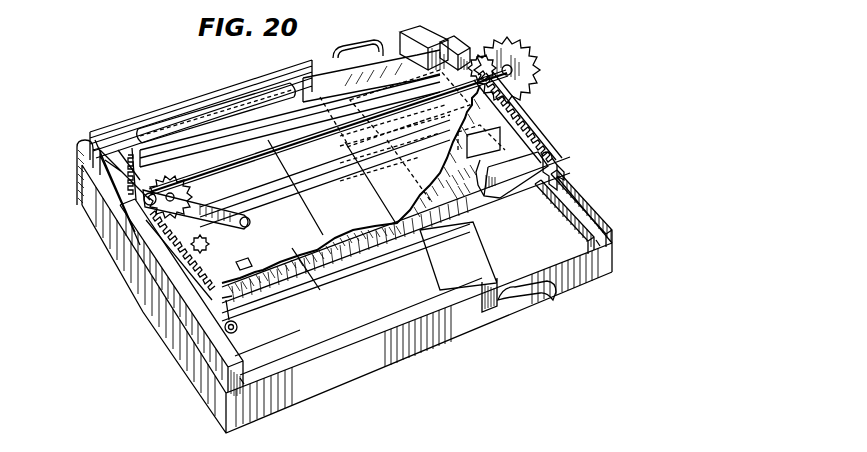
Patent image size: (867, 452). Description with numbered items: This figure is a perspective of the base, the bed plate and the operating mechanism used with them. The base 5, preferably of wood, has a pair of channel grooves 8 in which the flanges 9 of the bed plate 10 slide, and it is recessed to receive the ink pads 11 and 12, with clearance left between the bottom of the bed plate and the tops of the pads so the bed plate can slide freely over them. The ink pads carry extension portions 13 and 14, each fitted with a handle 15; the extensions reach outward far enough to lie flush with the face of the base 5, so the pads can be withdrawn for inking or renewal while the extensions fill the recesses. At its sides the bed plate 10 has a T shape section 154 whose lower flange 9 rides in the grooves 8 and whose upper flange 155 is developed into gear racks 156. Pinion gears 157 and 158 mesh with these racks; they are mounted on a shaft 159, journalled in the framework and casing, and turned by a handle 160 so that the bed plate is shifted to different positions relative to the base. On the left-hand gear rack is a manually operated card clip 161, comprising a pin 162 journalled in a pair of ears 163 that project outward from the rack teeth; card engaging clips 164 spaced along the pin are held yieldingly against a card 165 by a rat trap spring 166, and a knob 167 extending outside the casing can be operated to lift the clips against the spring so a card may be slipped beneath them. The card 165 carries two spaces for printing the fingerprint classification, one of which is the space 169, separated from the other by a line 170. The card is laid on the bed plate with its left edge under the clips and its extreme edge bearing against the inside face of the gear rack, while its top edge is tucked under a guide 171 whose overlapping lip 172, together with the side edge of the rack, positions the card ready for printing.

The base 5 is at (348, 368).
The channel grooves 8 is at (242, 380).
The flanges 9 is at (572, 181).
The bed plate 10 is at (387, 244).
The ink pad 11 is at (487, 187).
The ink pad 12 is at (446, 55).
The extension portion 13 is at (488, 308).
The extension portion 14 is at (392, 45).
The handle 15 is at (540, 295).
The T shape section 154 is at (562, 170).
The upper flange 155 is at (556, 160).
The gear racks 156 is at (524, 135).
The pinion gear 157 is at (515, 48).
The pinion gear 158 is at (115, 185).
The shaft 159 is at (333, 138).
The handle 160 is at (207, 207).
The card clip 161 is at (198, 255).
The pin 162 is at (183, 258).
The ears 163 is at (132, 147).
The card engaging clips 164 is at (249, 264).
The card 165 is at (304, 282).
The rat trap spring 166 is at (178, 312).
The knob 167 is at (234, 330).
The space 169 is at (480, 52).
The line 170 is at (292, 103).
The guide 171 is at (193, 117).
The overlapping lip 172 is at (257, 107).